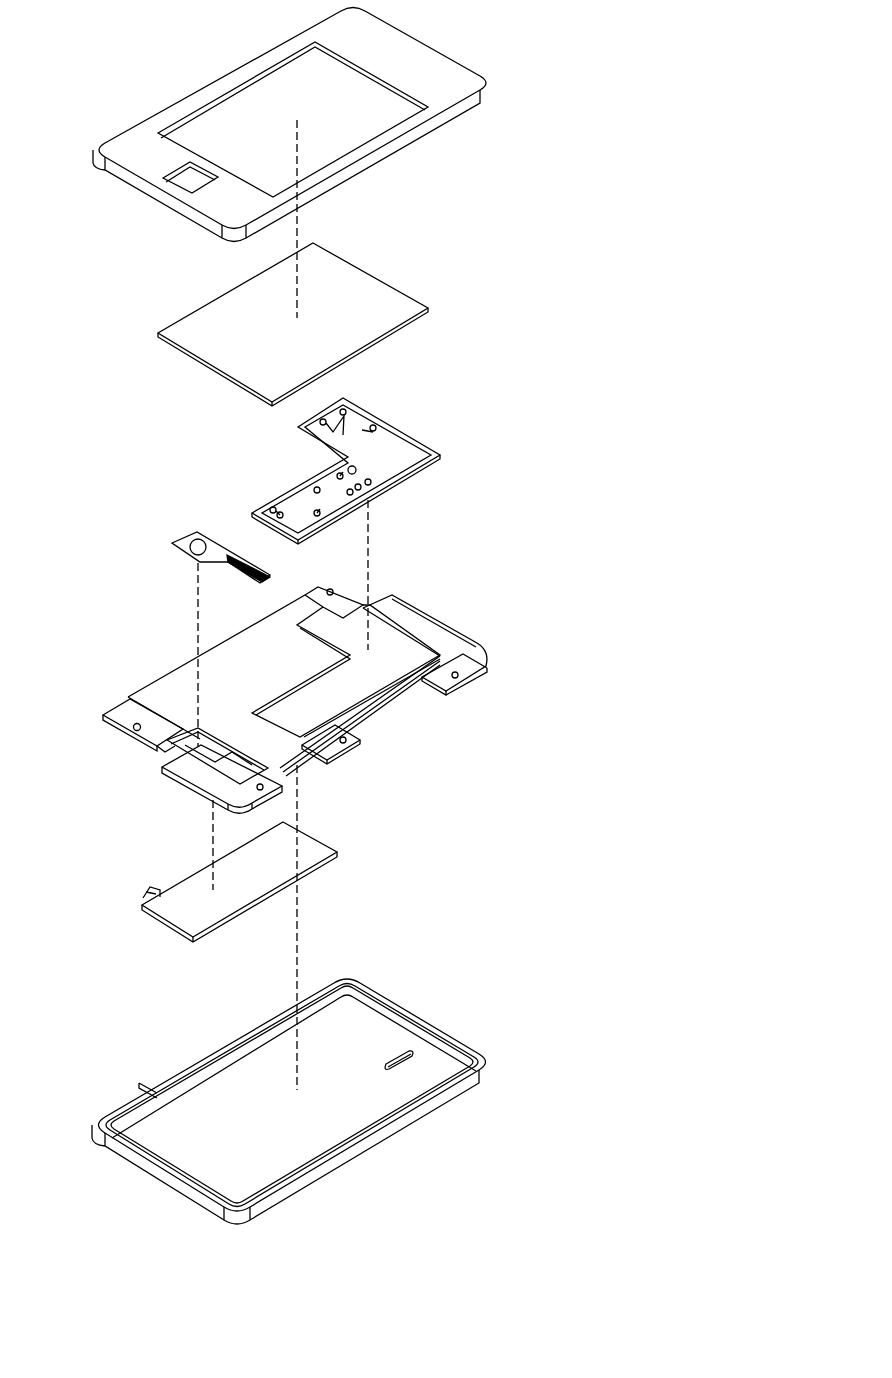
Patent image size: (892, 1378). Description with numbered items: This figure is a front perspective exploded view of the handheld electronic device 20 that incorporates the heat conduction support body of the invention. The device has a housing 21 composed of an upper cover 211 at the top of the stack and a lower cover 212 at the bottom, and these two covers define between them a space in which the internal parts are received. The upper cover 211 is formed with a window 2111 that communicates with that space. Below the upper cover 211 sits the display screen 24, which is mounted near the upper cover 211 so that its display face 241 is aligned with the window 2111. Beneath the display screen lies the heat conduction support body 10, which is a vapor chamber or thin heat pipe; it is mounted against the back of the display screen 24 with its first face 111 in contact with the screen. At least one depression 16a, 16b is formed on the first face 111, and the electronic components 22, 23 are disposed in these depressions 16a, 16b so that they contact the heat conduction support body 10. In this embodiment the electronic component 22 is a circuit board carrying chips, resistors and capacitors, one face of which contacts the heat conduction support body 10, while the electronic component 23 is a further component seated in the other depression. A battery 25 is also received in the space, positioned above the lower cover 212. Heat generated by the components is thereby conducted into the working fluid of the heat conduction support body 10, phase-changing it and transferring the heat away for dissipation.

The handheld electronic device 20 is at (666, 54).
The housing 21 is at (597, 205).
The upper cover 211 is at (428, 63).
The lower cover 212 is at (450, 1037).
The window 2111 is at (212, 120).
The display screen 24 is at (377, 300).
The display face 241 is at (208, 322).
The electronic component 22 is at (408, 447).
The electronic component 23 is at (190, 531).
The heat conduction support body 10 is at (440, 610).
The first face 111 is at (180, 677).
The depression 16a is at (360, 680).
The depression 16b is at (178, 742).
The battery 25 is at (308, 851).